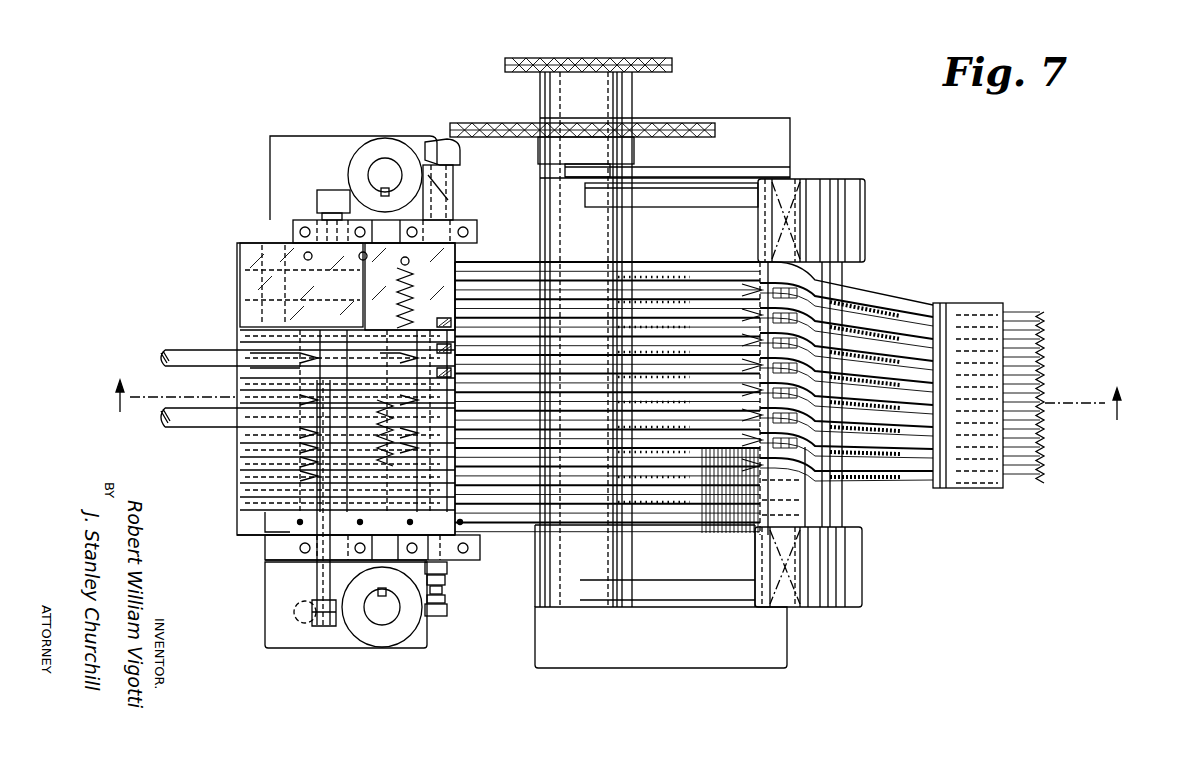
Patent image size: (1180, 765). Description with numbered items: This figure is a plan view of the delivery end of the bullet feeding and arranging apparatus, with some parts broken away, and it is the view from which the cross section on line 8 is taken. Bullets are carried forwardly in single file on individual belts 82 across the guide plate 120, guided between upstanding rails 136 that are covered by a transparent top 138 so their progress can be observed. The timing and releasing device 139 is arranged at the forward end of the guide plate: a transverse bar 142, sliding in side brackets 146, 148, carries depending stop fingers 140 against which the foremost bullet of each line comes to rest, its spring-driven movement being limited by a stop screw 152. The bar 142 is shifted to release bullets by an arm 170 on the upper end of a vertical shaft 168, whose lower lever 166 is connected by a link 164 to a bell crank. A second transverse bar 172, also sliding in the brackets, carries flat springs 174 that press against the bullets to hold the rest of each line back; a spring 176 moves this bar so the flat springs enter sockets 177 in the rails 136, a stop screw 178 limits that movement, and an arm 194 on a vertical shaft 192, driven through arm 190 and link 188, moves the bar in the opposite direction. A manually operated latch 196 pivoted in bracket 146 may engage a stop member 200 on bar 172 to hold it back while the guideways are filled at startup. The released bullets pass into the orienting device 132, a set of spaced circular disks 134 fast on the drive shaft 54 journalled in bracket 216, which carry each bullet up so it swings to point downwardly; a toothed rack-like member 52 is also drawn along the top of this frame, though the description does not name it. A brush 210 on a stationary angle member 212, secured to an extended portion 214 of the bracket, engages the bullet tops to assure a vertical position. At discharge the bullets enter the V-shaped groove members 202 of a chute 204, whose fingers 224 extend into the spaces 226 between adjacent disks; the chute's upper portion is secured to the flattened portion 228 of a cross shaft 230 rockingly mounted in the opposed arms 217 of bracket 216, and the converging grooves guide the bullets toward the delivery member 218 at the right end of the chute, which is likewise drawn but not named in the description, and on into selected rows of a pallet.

The timing and releasing device 139 is at (284, 106).
The vertically mounted shaft 168 is at (388, 178).
The arm 170 is at (442, 144).
The lever 166 is at (455, 193).
The transverse bar 142 is at (455, 216).
The side bracket 148 is at (295, 232).
The stop screw 178 is at (318, 212).
The transparent top or cover 138 is at (256, 251).
The second transverse bar 172 is at (255, 254).
The flat springs 174 is at (262, 292).
The rails 136 is at (237, 335).
The link 164 is at (180, 354).
The sockets 177 is at (242, 357).
The stop member 200 is at (268, 410).
The section line 8— 8 is at (617, 400).
The link 188 is at (178, 420).
The guide plate 120 is at (237, 471).
The spring 176 is at (237, 490).
The stop finger 140 is at (455, 277).
The manually operated latch 196 is at (316, 544).
The side bracket 146 is at (300, 559).
The arm 190 is at (317, 591).
The arm 194 is at (336, 628).
The vertical shaft 192 is at (384, 630).
The stop screw 152 is at (436, 628).
The circular disks 134 is at (591, 277).
The flattened portion 228 is at (672, 65).
The rack 52 is at (661, 127).
The drive shaft 54 is at (614, 173).
The bracket 216 is at (788, 143).
The opposed arms 217 is at (718, 183).
The spaces 226 is at (697, 270).
The cross shaft 230 is at (807, 221).
The orienting device 132 is at (680, 248).
The fingers 224 is at (716, 272).
The chute 204 is at (880, 277).
The V-shaped groove members 202 is at (905, 293).
The belts 82 is at (656, 492).
The brush 210 is at (731, 536).
The stationary angle member 212 is at (817, 575).
The extended portion 214 is at (848, 602).
The connector 218 is at (984, 490).